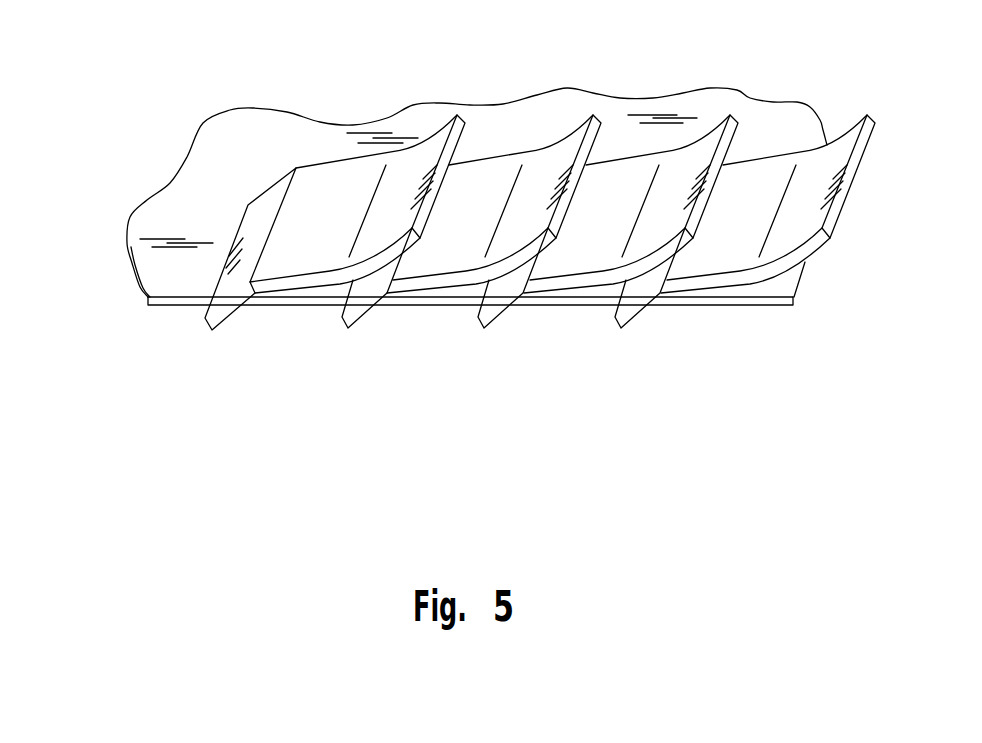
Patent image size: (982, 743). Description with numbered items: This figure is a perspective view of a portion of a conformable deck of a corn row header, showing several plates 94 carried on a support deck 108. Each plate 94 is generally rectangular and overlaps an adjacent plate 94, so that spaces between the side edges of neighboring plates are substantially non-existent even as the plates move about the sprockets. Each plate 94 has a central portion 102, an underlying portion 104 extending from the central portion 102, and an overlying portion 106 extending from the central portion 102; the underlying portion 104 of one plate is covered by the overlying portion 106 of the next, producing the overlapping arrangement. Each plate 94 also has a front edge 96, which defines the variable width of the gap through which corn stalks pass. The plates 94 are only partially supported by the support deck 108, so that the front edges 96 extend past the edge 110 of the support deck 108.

The plate 94 is at (328, 157).
The front edge 96 is at (422, 283).
The central portion 102 is at (296, 245).
The underlying portion 104 is at (253, 223).
The overlying portion 106 is at (547, 173).
The support deck 108 is at (159, 313).
The edge 110 is at (453, 305).